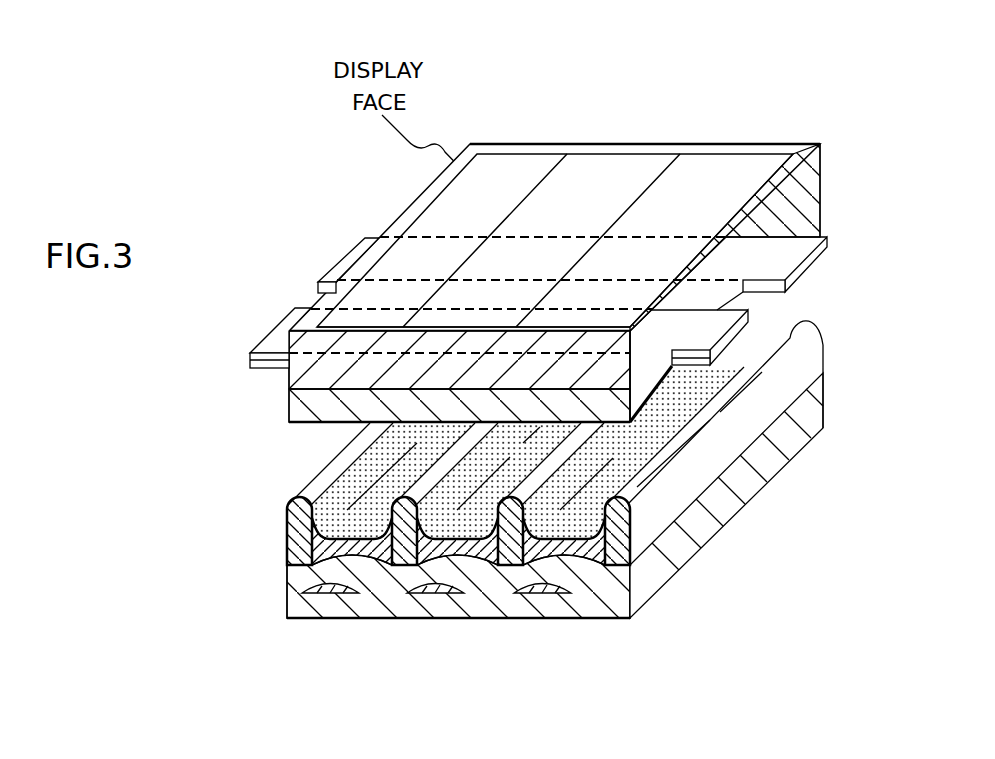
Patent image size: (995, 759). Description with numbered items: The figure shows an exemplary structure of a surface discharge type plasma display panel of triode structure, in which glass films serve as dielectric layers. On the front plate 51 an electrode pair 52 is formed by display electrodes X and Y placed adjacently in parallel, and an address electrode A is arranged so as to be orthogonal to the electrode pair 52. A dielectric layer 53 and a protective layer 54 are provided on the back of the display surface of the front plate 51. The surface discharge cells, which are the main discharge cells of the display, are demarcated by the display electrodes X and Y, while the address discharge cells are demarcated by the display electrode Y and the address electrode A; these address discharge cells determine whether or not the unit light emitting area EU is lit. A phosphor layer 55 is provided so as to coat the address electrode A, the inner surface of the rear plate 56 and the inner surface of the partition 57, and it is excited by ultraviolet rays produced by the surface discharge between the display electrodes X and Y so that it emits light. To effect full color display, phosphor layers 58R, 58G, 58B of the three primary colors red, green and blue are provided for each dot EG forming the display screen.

The front plate 51 is at (813, 163).
The electrode pair 52 is at (265, 193).
The dielectric layer 53 is at (288, 389).
The protective layer 54 is at (297, 424).
The phosphor layer 55 is at (335, 493).
The rear plate 56 is at (717, 515).
The partition 57 is at (806, 360).
The red phosphor layer 58R is at (380, 556).
The green phosphor layer 58G is at (485, 556).
The blue phosphor layer 58B is at (597, 556).
The address electrode A is at (323, 593).
The dot EG is at (745, 70).
The unit light emitting area EU is at (517, 167).
The display electrode X is at (340, 253).
The display electrode Y is at (273, 326).